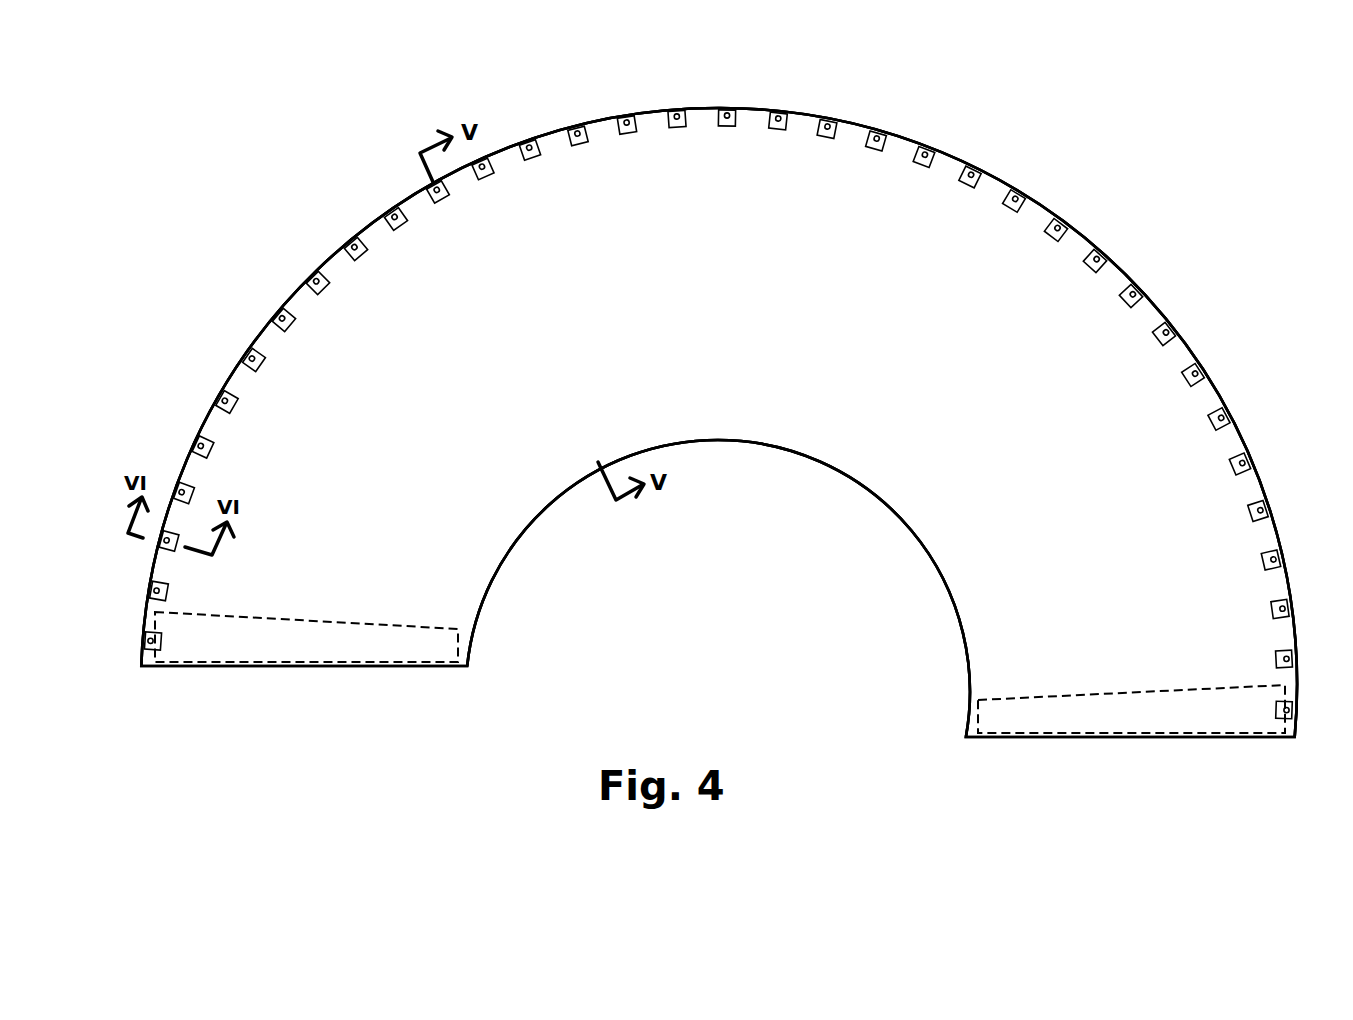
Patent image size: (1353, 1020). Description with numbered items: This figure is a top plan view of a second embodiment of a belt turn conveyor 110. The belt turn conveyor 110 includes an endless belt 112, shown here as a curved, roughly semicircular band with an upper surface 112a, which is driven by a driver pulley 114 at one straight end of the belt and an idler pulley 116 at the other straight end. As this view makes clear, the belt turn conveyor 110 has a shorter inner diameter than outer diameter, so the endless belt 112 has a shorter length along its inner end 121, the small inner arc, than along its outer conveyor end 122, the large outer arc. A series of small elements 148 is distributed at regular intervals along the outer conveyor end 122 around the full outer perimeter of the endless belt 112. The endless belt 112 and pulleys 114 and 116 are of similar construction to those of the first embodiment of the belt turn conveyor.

The belt turn conveyor 110 is at (1029, 112).
The endless belt 112 is at (1165, 433).
The collar body surface 112a is at (989, 413).
The driver pulley 114 is at (290, 668).
The idler pulley 116 is at (1200, 736).
The inner end 121 is at (934, 566).
The outer conveyor end 122 is at (1264, 483).
The snap fasteners 148 is at (772, 120).